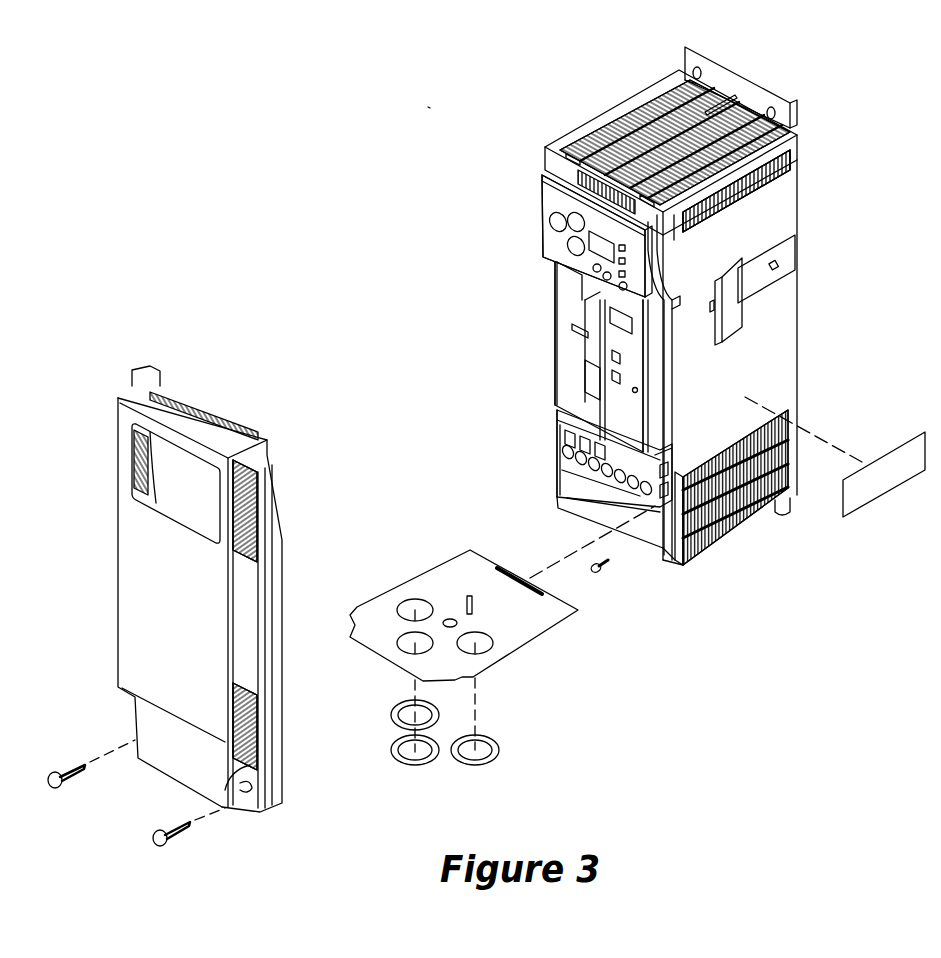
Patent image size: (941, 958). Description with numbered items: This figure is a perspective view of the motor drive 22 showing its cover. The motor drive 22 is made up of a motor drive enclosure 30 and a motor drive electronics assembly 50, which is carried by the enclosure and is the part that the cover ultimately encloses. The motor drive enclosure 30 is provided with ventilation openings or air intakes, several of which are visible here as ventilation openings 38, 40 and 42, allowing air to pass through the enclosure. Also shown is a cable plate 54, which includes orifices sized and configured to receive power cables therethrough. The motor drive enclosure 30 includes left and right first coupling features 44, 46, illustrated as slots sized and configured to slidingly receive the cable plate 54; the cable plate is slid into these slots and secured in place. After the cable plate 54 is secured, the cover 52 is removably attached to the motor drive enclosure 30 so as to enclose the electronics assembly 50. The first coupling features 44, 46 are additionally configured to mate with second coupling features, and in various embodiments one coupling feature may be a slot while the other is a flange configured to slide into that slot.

The motor drive 22 is at (428, 107).
The motor drive enclosure 30 is at (558, 128).
The ventilation opening 38 is at (657, 85).
The ventilation opening 40 is at (792, 153).
The ventilation opening 42 is at (797, 427).
The left first coupling feature 44 is at (553, 497).
The right first coupling feature 46 is at (675, 567).
The motor drive electronics assembly 50 is at (551, 313).
The cover 52 is at (135, 597).
The cable plate 54 is at (446, 585).